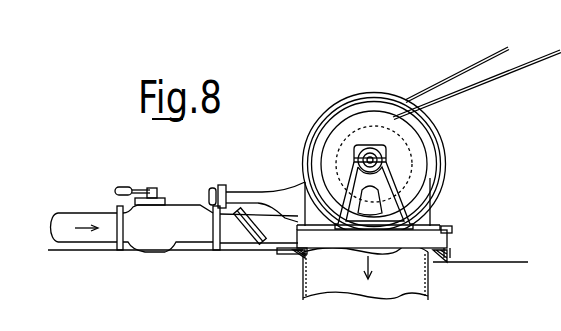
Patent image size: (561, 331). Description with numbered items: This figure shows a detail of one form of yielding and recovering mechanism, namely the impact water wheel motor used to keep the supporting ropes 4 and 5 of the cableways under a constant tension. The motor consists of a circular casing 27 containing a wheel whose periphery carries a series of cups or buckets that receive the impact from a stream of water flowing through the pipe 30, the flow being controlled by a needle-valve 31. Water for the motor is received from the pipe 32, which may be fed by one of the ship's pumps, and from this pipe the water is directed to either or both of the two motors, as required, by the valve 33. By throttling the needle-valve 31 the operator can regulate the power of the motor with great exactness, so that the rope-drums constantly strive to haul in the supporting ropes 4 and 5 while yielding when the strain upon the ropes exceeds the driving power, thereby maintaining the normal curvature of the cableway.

The supporting rope 4 is at (433, 88).
The supporting rope 5 is at (528, 64).
The circular casing 27 is at (427, 208).
The pipe 30 is at (247, 243).
The needle-valve 31 is at (269, 196).
The pipe 32 is at (77, 213).
The valve 33 is at (158, 191).